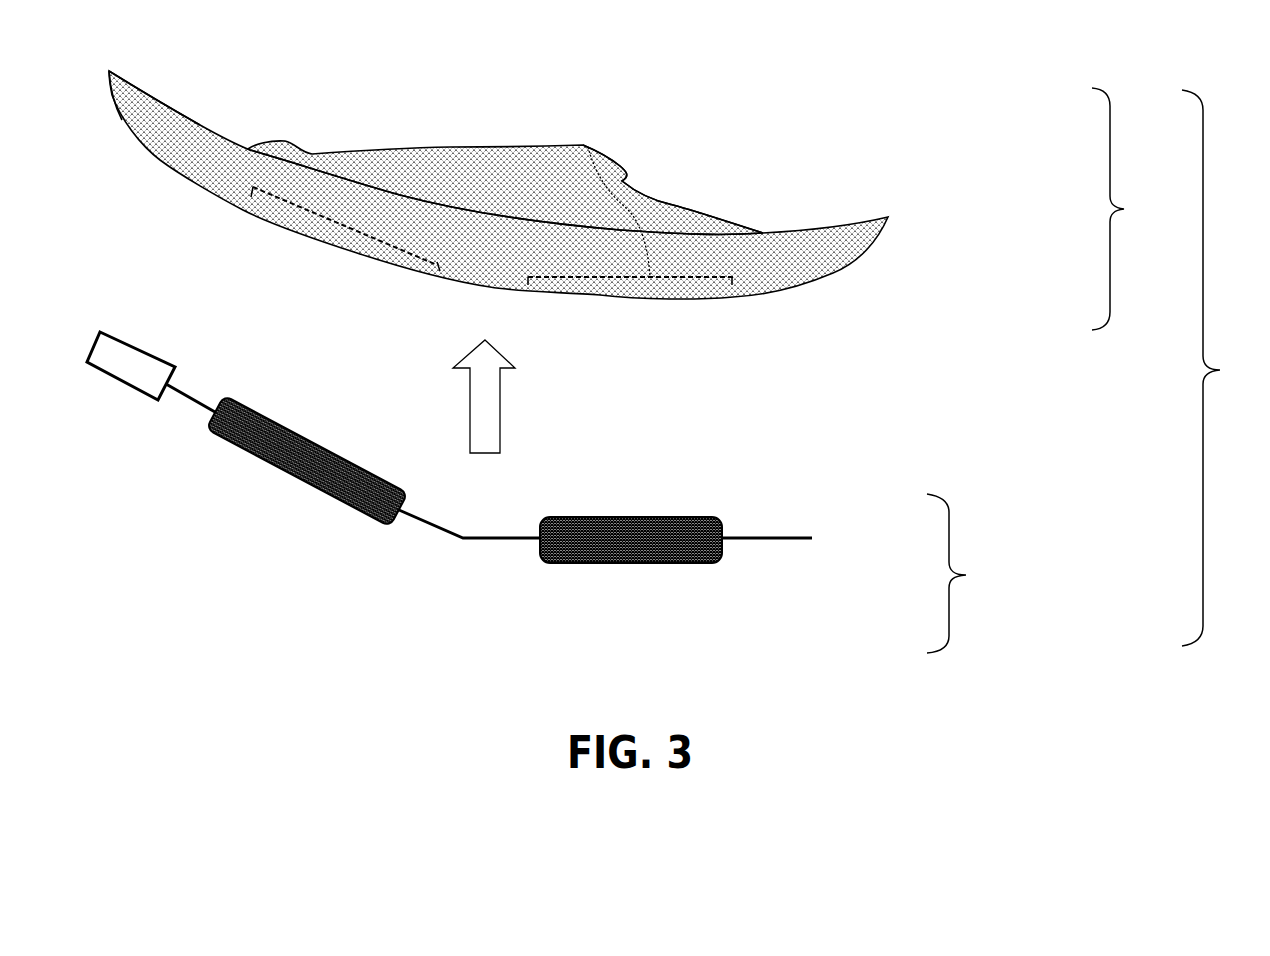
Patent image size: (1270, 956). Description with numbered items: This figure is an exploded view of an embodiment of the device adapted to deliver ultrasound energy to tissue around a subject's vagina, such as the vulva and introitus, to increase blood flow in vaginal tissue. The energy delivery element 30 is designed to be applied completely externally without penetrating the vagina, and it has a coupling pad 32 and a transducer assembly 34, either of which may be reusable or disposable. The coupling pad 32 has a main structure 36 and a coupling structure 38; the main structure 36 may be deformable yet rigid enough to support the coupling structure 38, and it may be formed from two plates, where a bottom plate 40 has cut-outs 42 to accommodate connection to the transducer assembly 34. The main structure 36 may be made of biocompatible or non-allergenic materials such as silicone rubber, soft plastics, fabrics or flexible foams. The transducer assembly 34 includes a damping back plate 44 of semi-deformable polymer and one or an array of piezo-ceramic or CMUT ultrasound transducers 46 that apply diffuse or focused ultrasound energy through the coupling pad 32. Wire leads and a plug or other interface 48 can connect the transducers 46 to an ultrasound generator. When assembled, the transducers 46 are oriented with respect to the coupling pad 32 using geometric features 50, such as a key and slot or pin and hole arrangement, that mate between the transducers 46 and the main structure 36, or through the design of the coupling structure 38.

The energy delivery element 30 is at (1217, 368).
The coupling pad 32 is at (1130, 209).
The transducer assembly 34 is at (964, 573).
The main structure 36 is at (847, 252).
The coupling structure 38 is at (700, 218).
The bottom plate 40 is at (138, 98).
The cut-outs 42 is at (380, 160).
The damping back plate 44 is at (200, 407).
The ultrasound transducers 46 is at (545, 563).
The plug or interface 48 is at (115, 378).
The geometric features 50 is at (588, 147).